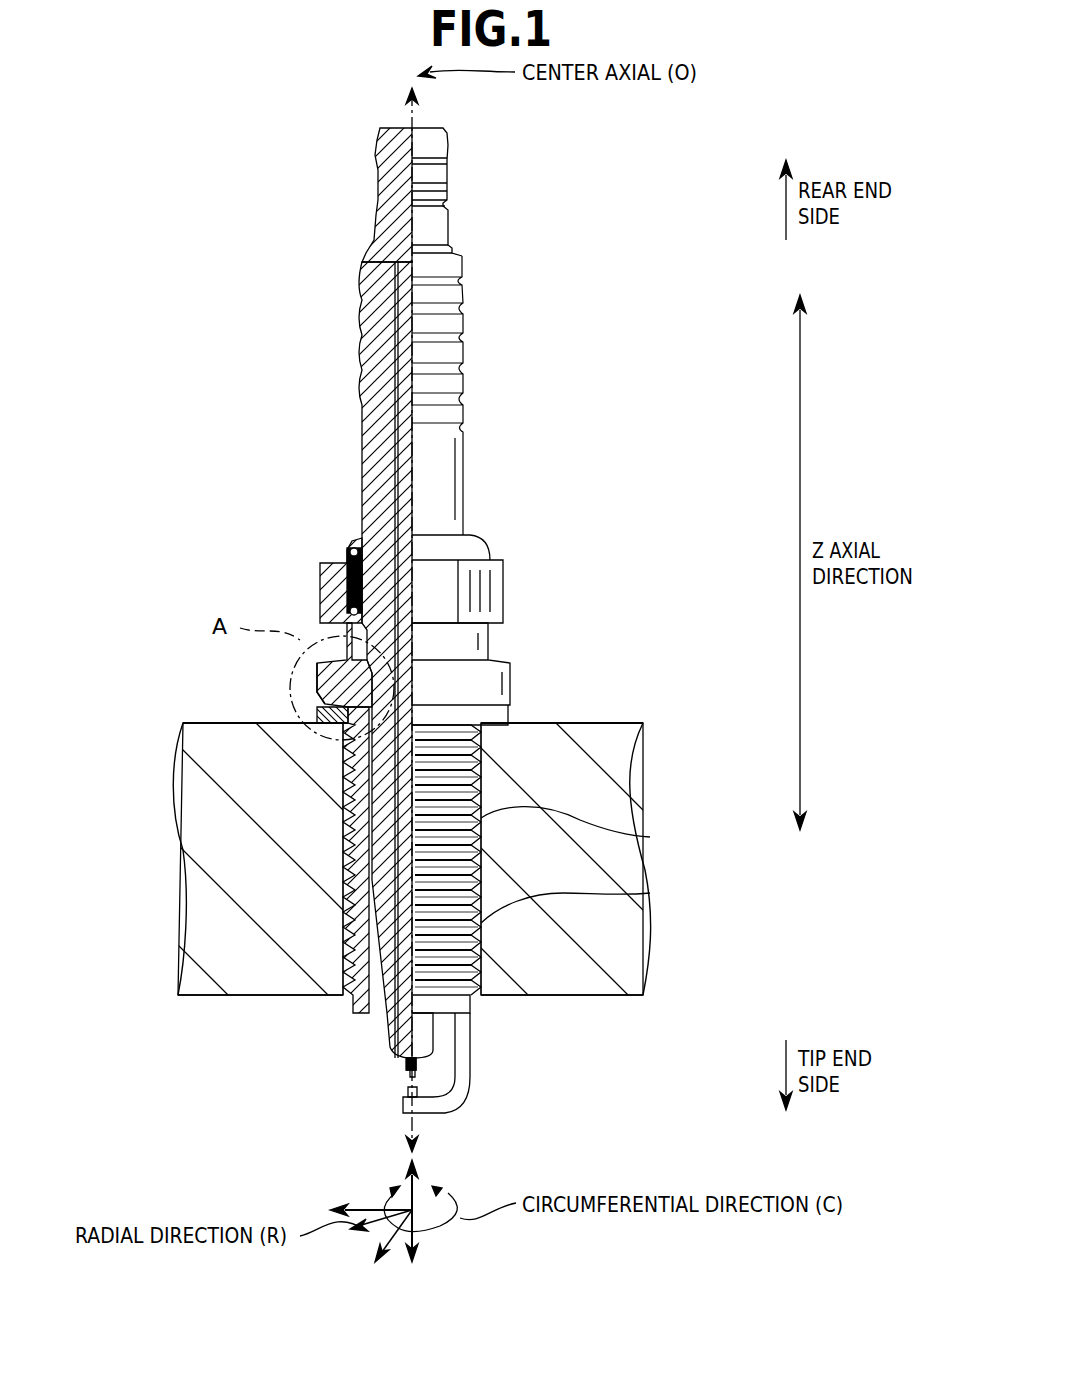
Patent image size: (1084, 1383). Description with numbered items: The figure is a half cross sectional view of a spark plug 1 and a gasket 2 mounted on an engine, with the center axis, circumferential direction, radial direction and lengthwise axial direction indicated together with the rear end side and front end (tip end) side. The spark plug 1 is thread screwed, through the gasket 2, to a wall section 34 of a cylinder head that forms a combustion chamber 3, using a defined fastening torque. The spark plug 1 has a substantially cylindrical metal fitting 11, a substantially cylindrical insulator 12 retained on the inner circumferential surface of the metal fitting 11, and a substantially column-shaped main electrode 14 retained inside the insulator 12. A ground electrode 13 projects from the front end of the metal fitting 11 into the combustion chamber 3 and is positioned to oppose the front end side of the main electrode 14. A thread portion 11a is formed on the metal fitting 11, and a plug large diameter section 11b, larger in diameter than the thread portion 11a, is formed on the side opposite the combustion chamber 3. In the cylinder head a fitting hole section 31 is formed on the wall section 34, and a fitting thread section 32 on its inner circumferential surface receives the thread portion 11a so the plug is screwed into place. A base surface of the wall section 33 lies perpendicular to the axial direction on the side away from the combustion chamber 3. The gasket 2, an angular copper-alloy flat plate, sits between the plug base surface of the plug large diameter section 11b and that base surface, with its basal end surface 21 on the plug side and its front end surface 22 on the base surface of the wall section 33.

The spark plug 1 is at (636, 160).
The gasket 2 is at (320, 713).
The combustion chamber 3 is at (205, 1010).
The metal fitting 11 is at (330, 572).
The thread portion 11a is at (478, 815).
The plug large diameter section 11b is at (496, 683).
The insulator 12 is at (368, 422).
The ground electrode 13 is at (438, 1104).
The main electrode 14 is at (398, 1015).
The basal end surface 21 is at (316, 688).
The front end surface 22 is at (345, 728).
The fitting hole section 31 is at (338, 880).
The fitting thread section 32 is at (480, 897).
The wall section 33 is at (610, 722).
The wall section 34 is at (533, 735).